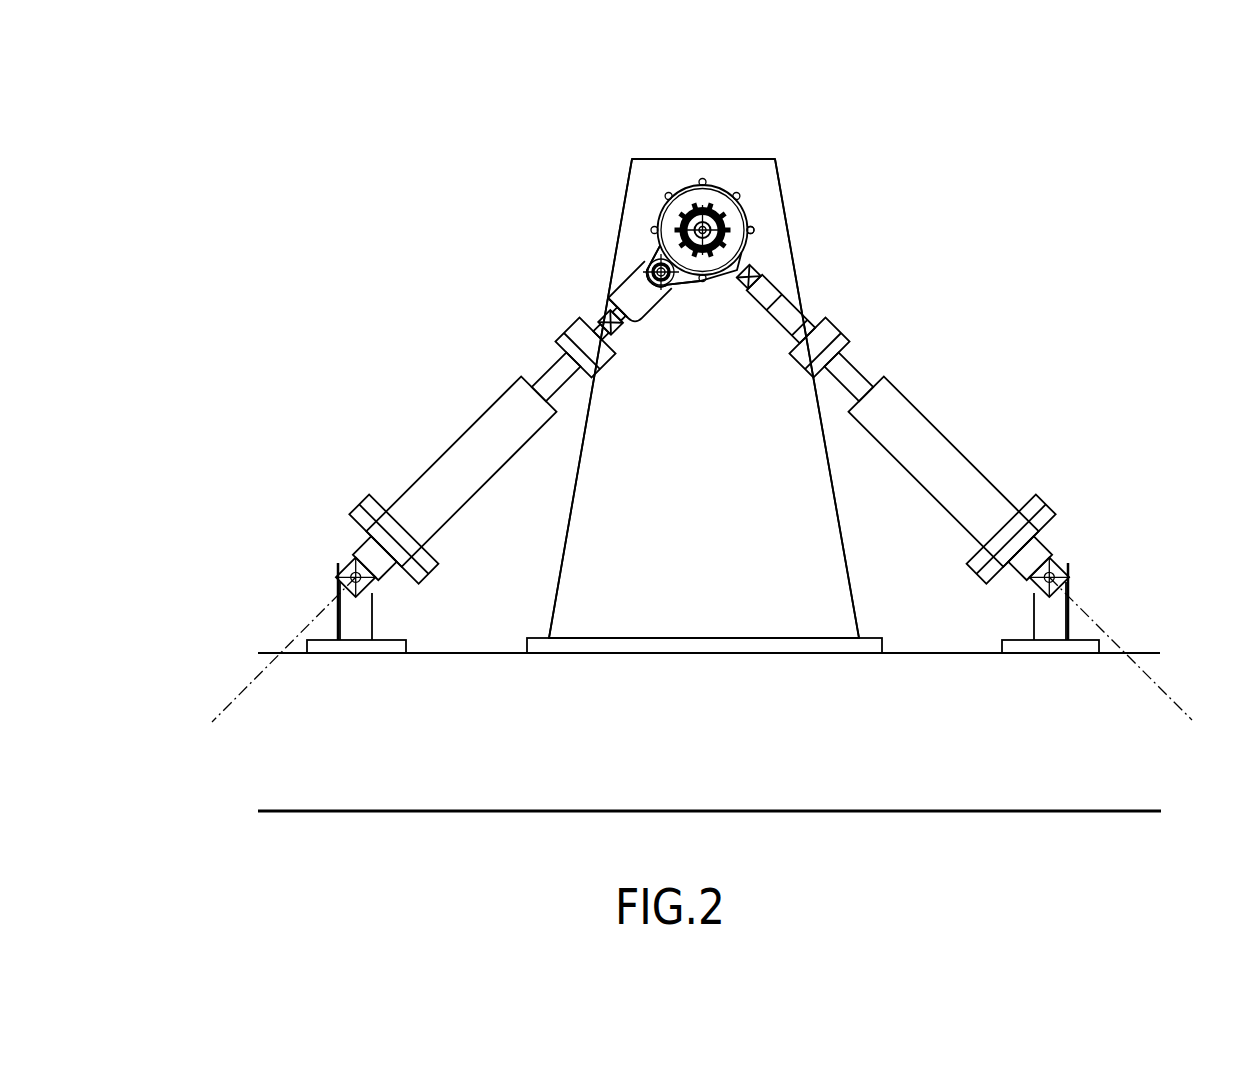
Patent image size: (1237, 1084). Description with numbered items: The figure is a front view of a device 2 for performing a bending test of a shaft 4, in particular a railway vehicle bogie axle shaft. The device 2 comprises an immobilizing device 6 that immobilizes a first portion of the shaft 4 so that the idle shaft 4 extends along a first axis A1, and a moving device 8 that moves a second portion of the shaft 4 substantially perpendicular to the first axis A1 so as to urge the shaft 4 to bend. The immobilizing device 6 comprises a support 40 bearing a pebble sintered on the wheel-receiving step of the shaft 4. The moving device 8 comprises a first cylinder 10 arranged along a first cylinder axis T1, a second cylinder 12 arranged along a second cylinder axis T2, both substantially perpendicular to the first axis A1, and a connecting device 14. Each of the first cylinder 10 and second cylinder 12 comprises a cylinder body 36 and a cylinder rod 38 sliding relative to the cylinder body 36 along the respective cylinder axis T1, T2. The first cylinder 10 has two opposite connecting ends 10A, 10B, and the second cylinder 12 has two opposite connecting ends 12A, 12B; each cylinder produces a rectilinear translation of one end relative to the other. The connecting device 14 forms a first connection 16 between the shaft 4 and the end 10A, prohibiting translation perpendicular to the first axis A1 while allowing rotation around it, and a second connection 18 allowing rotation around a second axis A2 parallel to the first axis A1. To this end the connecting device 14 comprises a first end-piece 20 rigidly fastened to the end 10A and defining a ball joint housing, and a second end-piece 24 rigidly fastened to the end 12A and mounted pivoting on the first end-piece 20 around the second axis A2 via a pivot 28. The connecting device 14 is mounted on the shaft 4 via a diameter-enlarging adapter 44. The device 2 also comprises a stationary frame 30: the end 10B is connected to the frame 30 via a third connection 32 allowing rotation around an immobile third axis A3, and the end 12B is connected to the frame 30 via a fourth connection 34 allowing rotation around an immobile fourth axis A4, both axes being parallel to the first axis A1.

The device 2 is at (533, 207).
The shaft 4 is at (713, 214).
The immobilizing device 6 is at (781, 183).
The moving device 8 is at (353, 395).
The first cylinder 10 is at (966, 440).
The connecting end of the first cylinder 10A is at (757, 298).
The connecting end of the first cylinder 10B is at (1045, 559).
The second cylinder 12 is at (465, 428).
The connecting end of the second cylinder 12A is at (608, 318).
The connecting end of the second cylinder 12B is at (356, 561).
The connecting device 14 is at (727, 180).
The first connection 16 is at (756, 243).
The second connection 18 is at (636, 229).
The first end-piece 20 is at (752, 250).
The second end-piece 24 is at (640, 333).
The pivot 28 is at (668, 288).
The stationary frame 30 is at (938, 776).
The third connection 32 is at (1012, 595).
The fourth connection 34 is at (393, 589).
The cylinder body 36 is at (748, 230).
The cylinder rod 38 is at (550, 370).
The support 40 is at (833, 558).
The diameter-enlarging adapter 44 is at (733, 218).
The first axis A1 is at (690, 212).
The second axis A2 is at (650, 264).
The third axis A3 is at (1058, 577).
The fourth axis A4 is at (350, 577).
The first cylinder axis T1 is at (1180, 707).
The second cylinder axis T2 is at (235, 698).